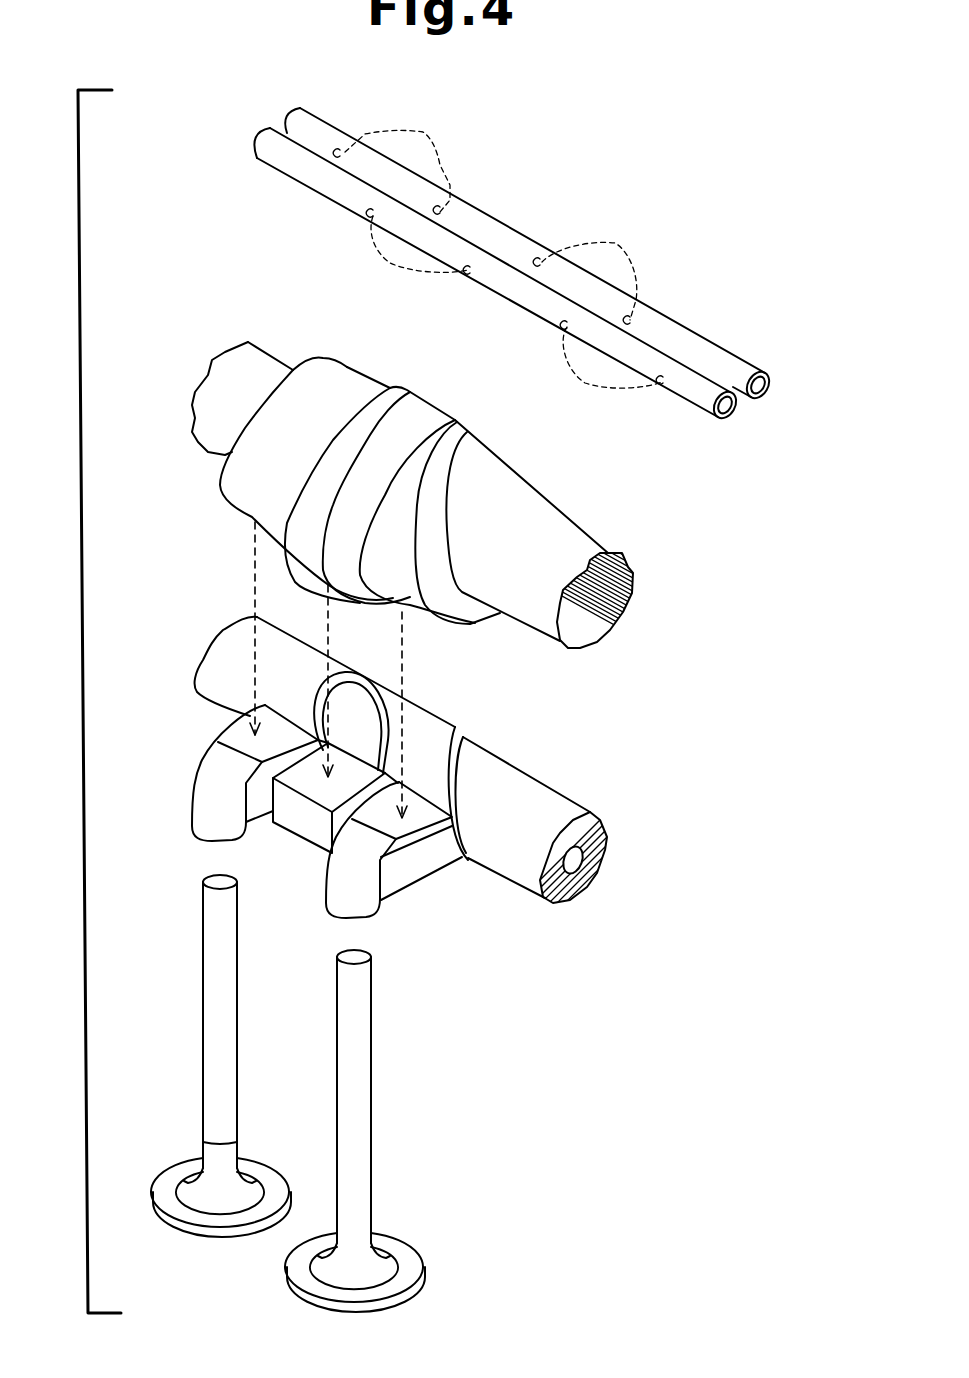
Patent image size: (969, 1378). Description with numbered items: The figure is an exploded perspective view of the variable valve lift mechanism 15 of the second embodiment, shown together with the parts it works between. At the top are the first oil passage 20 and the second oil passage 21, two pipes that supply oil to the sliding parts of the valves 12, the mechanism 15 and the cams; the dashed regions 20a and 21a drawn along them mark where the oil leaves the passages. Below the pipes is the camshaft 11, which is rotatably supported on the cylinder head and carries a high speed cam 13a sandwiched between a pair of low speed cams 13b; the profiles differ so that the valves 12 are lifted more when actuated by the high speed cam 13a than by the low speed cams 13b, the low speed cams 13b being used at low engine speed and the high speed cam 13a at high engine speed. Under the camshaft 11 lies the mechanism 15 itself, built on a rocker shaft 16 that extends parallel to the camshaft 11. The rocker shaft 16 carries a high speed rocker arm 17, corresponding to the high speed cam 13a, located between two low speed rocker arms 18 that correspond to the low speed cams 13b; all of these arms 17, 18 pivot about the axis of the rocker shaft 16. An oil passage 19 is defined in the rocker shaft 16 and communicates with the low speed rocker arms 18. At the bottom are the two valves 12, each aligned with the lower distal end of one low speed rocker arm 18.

The camshaft 11 is at (498, 496).
The valves 12 is at (223, 1012).
The high speed cam 13a is at (437, 405).
The low speed cams 13b is at (356, 375).
The variable valve lift mechanism 15 is at (409, 782).
The rocker shaft 16 is at (442, 782).
The high speed rocker arm 17 is at (412, 705).
The low speed rocker arms 18 is at (208, 775).
The oil passage 19 is at (585, 868).
The first oil passage 20 is at (760, 368).
The oil spray from first pipe 20a is at (497, 207).
The second oil passage 21 is at (722, 418).
The oil spray from second pipe 21a is at (511, 318).